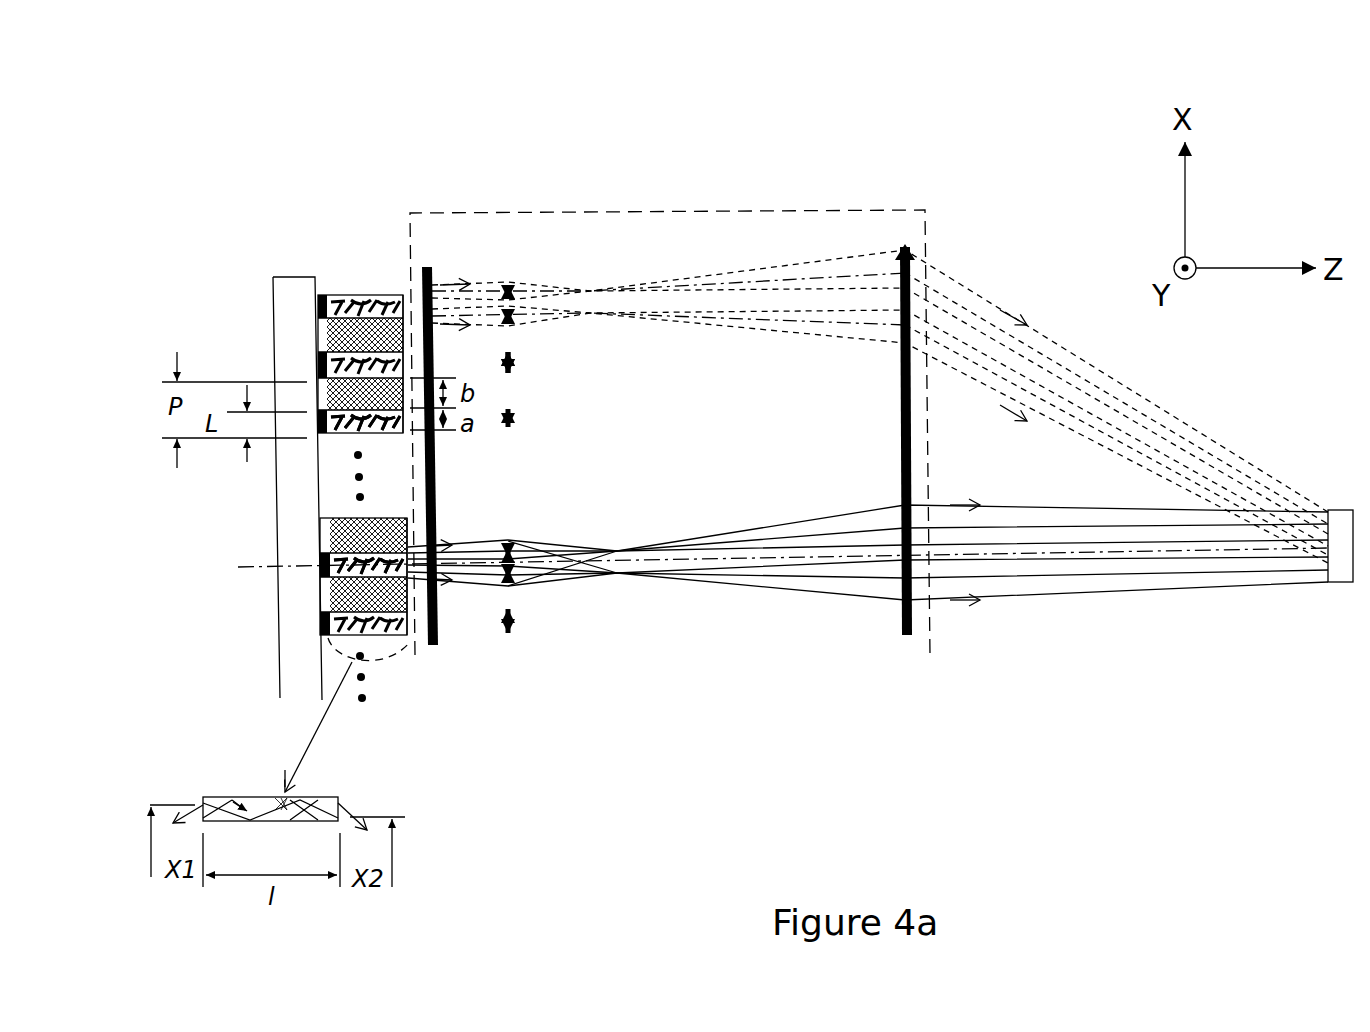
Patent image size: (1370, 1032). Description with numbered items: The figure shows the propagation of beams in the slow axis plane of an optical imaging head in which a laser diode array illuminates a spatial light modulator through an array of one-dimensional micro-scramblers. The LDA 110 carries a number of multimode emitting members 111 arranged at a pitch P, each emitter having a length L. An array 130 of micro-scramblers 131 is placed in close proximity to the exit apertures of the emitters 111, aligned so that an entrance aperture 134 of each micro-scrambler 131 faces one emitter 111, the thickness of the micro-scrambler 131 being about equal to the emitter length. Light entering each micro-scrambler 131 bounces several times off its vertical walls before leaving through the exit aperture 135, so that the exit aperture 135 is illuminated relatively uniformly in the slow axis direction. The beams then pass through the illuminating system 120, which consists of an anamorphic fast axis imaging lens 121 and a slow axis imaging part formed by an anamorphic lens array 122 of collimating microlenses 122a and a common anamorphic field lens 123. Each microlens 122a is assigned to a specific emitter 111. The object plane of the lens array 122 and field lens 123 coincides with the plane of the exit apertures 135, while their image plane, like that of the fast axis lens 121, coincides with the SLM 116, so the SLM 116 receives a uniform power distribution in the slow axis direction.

The laser diode array 110 is at (266, 274).
The emitting members 111 is at (320, 565).
The SLM 116 is at (1343, 527).
The illuminating system 120 is at (641, 247).
The fast axis imaging lens 121 is at (433, 270).
The anamorphic lens array 122 is at (510, 662).
The collimating microlens 122a is at (516, 622).
The field lens 123 is at (903, 637).
The micro-scrambler array 130 is at (378, 287).
The micro-scrambler 131 is at (322, 583).
The entrance aperture 134 is at (321, 294).
The exit aperture 135 is at (403, 294).